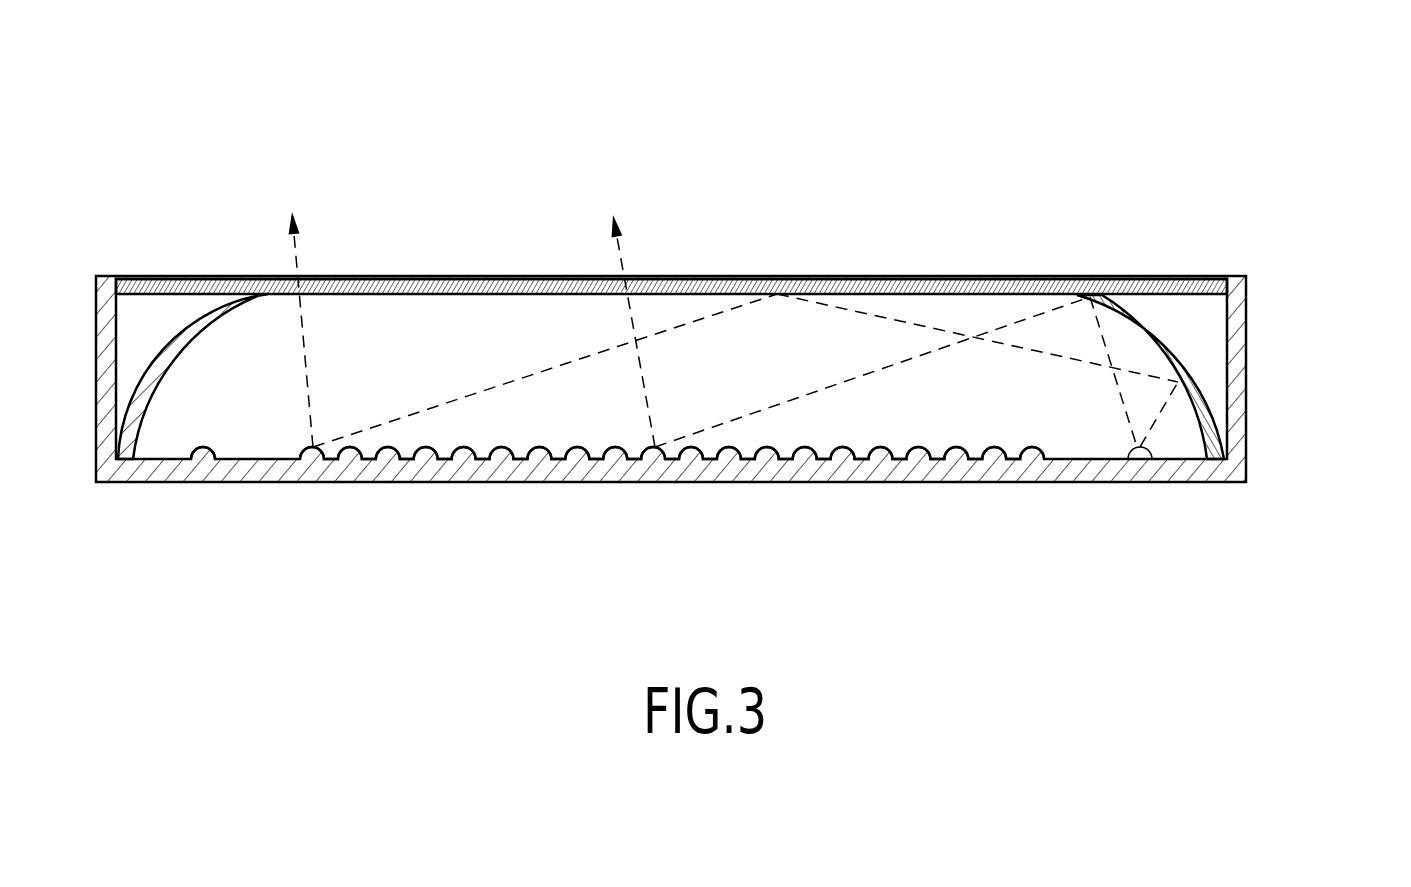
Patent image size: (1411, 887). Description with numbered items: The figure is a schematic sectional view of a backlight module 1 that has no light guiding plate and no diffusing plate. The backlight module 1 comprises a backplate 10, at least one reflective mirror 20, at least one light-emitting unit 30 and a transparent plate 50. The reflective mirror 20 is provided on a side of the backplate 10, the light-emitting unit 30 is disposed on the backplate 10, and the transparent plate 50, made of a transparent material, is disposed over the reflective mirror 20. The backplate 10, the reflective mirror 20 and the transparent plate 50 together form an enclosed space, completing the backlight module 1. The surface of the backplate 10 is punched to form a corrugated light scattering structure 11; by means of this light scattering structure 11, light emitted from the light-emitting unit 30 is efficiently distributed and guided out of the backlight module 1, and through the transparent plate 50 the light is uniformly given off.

The backlight module 1 is at (753, 291).
The backplate 10 is at (1238, 472).
The light scattering structure 11 is at (925, 446).
The reflective mirror 20 is at (1197, 377).
The light-emitting unit 30 is at (1125, 452).
The transparent plate 50 is at (935, 275).